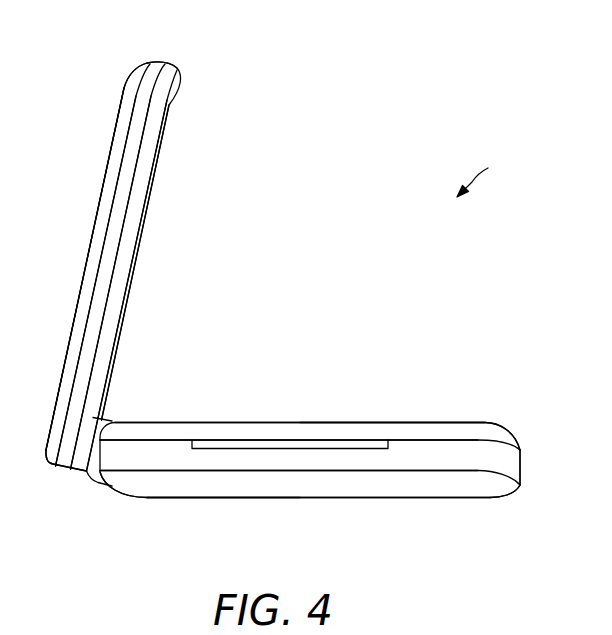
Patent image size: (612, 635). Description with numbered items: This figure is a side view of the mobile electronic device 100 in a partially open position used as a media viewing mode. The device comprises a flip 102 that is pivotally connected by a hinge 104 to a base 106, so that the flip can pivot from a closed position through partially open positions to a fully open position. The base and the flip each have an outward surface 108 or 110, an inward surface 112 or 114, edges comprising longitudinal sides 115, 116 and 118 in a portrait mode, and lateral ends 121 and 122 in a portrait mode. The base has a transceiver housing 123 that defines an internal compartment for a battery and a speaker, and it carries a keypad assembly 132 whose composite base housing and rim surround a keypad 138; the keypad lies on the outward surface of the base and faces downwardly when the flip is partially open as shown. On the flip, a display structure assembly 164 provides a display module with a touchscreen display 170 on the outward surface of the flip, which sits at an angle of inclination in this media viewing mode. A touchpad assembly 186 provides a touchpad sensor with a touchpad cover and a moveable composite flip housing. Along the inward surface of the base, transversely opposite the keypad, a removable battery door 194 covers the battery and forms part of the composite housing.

The mobile electronic device 100 is at (488, 174).
The flip 102 is at (150, 62).
The hinge 104 is at (88, 483).
The base 106 is at (522, 467).
The outward surface of the base 108 is at (462, 498).
The outward surface of the flip 110 is at (116, 125).
The inward surface of the base 112 is at (440, 421).
The inward surface of the flip 114 is at (170, 111).
The longitudinal side of the base 115 is at (521, 486).
The longitudinal side of the flip 116 is at (57, 474).
The longitudinal side of the flip 118 is at (139, 158).
The lateral end of the flip 121 is at (99, 265).
The lateral end of the base 122 is at (155, 438).
The transceiver housing 123 is at (110, 488).
The keypad assembly 132 is at (195, 498).
The keypad 138 is at (312, 498).
The display structure assembly 164 is at (133, 72).
The touchscreen display 170 is at (74, 317).
The touchpad assembly 186 is at (144, 225).
The removable battery door 194 is at (287, 421).